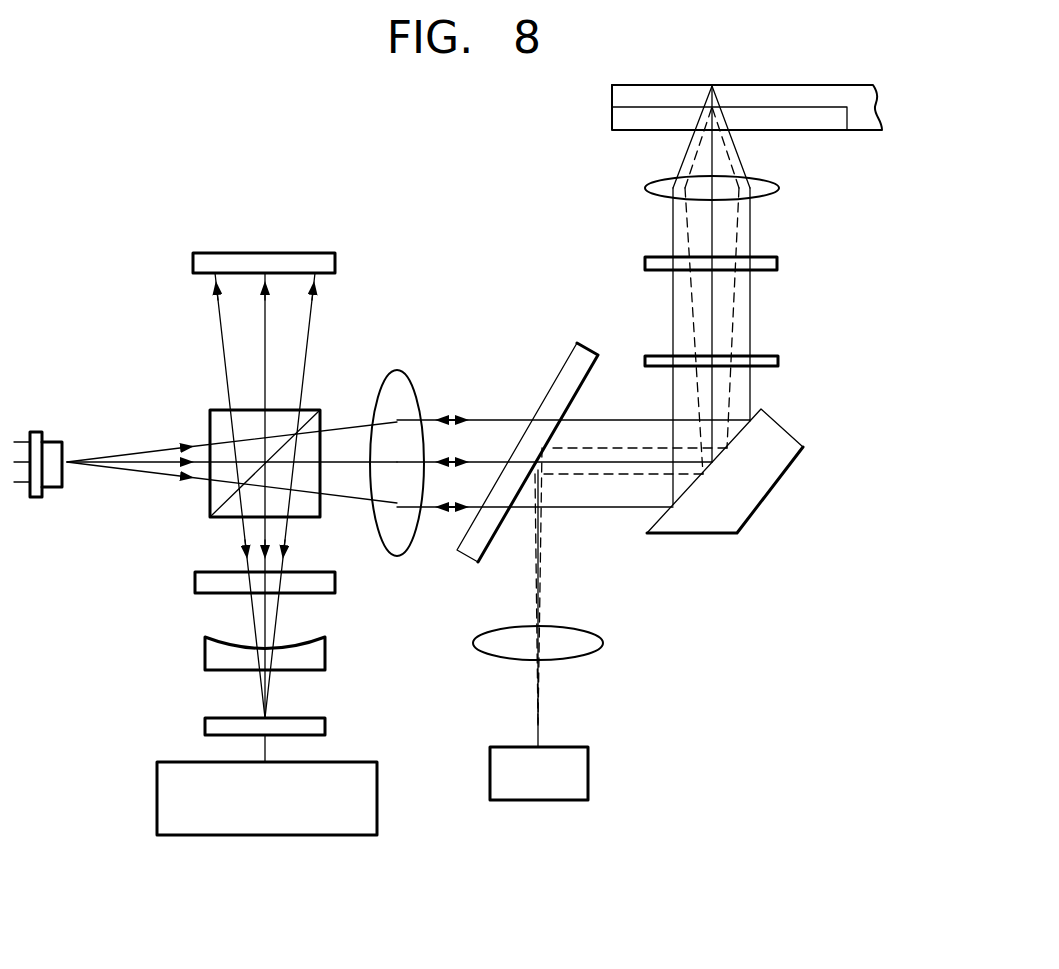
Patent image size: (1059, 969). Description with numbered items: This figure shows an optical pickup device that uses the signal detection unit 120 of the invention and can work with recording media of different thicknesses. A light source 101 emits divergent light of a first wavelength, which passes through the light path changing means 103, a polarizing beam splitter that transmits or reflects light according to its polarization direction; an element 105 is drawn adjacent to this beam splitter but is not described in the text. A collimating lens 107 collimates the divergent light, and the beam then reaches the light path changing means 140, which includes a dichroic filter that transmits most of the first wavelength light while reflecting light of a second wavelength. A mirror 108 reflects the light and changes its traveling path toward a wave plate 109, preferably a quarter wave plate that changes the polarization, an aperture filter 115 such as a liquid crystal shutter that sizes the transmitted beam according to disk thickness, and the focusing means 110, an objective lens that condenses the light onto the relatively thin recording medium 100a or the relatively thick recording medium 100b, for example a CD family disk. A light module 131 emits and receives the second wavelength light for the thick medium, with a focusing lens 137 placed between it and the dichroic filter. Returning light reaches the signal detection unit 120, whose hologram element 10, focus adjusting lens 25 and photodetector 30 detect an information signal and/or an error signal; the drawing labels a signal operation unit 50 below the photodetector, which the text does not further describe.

The light source 101 is at (36, 497).
The light path changing means 103 is at (208, 500).
The reflecting member 105 is at (293, 253).
The collimating lens 107 is at (397, 371).
The light path changing means 140 is at (566, 360).
The mirror 108 is at (777, 485).
The wave plate 109 is at (778, 361).
The aperture filter 115 is at (777, 263).
The focusing means 110 is at (779, 188).
The recording medium 100a is at (615, 118).
The recording medium 100b is at (615, 95).
The hologram element 10 is at (335, 582).
The focus adjusting lens 25 is at (325, 652).
The photodetector 30 is at (325, 727).
The signal operation unit 50 is at (377, 787).
The signal detection unit 120 is at (150, 651).
The focusing lens 137 is at (603, 643).
The light module 131 is at (588, 778).